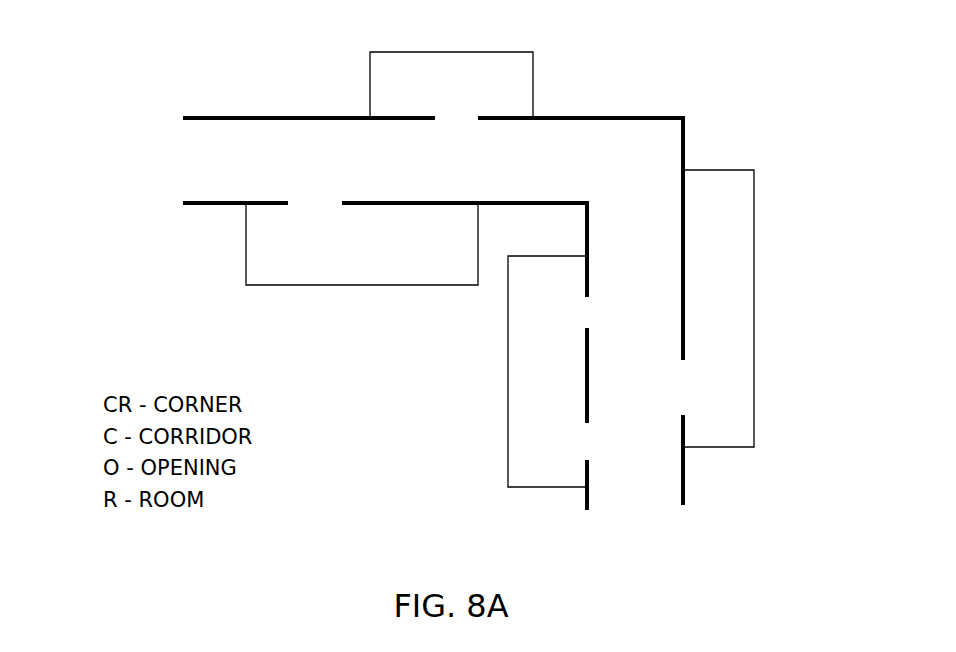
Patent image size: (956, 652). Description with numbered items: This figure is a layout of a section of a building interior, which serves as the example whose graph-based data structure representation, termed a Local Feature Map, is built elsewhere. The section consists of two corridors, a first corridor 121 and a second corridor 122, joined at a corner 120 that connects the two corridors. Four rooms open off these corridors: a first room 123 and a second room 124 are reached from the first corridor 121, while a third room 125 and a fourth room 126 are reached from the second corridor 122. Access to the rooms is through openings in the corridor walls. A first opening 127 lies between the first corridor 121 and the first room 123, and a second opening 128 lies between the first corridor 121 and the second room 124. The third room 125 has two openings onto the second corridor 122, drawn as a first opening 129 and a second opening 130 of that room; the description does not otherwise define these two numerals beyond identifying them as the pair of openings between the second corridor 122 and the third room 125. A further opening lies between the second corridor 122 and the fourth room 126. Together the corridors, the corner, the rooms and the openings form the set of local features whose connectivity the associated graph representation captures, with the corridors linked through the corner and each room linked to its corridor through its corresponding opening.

The corner 120 is at (648, 132).
The corridor 121 is at (197, 142).
The corridor 122 is at (652, 498).
The room 123 is at (265, 267).
The room 124 is at (512, 70).
The room 125 is at (525, 325).
The room 126 is at (735, 430).
The opening 127 is at (335, 203).
The opening 128 is at (455, 128).
The opening O31 129 is at (600, 302).
The opening O32 130 is at (593, 423).